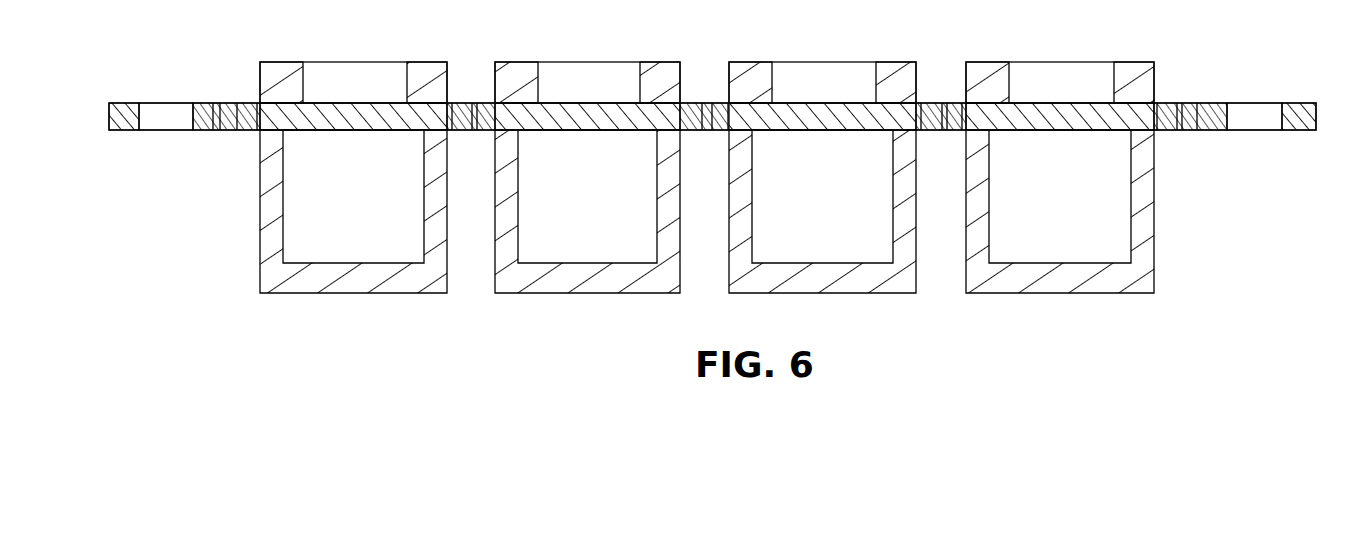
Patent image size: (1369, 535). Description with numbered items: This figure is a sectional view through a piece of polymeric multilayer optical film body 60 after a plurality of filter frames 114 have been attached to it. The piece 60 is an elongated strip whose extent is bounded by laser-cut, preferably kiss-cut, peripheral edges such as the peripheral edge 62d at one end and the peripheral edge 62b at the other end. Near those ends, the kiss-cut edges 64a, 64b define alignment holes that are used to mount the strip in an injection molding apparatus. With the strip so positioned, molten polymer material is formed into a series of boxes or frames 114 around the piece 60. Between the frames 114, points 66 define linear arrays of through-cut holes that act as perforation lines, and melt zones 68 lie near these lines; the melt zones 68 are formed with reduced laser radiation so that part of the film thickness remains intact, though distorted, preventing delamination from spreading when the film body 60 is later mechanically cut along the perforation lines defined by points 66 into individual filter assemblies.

The polymeric multilayer optical film body piece 60 is at (80, 103).
The laser-cut peripheral edge 62b is at (1317, 114).
The laser-cut peripheral edge 62d is at (123, 131).
The alignment hole edge 64a is at (163, 102).
The alignment hole edge 64b is at (1246, 101).
The perforation points 66 is at (240, 103).
The melt zones 68 is at (257, 131).
The filter frames 114 is at (436, 288).